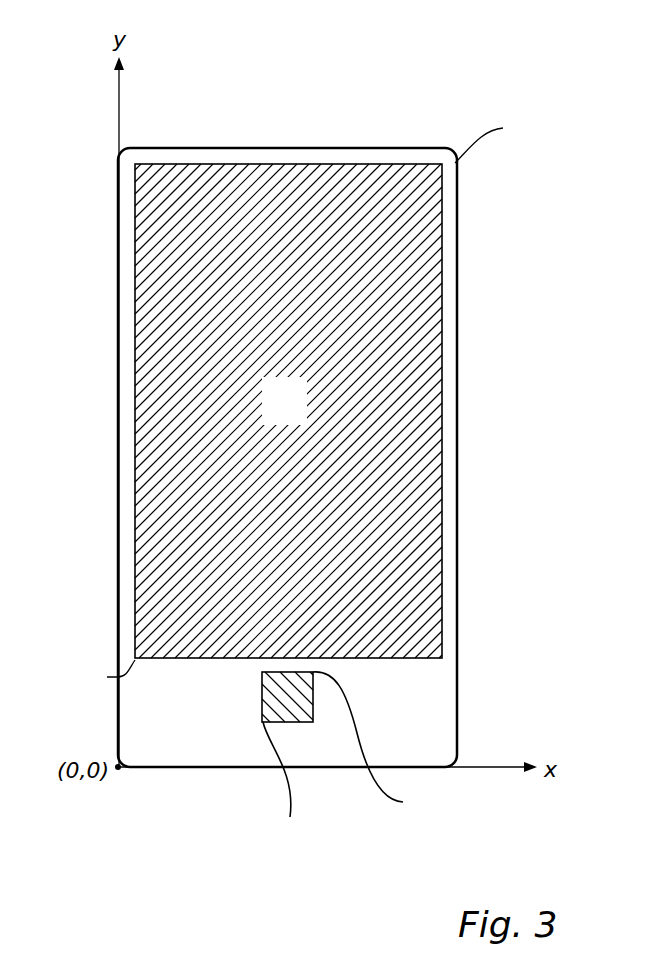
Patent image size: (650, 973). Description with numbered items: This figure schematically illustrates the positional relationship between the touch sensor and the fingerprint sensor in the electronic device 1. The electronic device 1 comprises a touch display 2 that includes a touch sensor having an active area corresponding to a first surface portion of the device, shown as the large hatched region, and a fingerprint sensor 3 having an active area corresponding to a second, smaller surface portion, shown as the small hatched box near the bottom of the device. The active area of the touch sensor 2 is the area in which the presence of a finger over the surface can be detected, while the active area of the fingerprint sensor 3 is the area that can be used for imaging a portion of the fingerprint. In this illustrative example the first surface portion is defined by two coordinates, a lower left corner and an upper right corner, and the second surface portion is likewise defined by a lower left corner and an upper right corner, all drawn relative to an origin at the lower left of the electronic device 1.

The electronic device 1 is at (386, 96).
The touch display 2 is at (232, 164).
The fingerprint sensor 3 is at (263, 708).